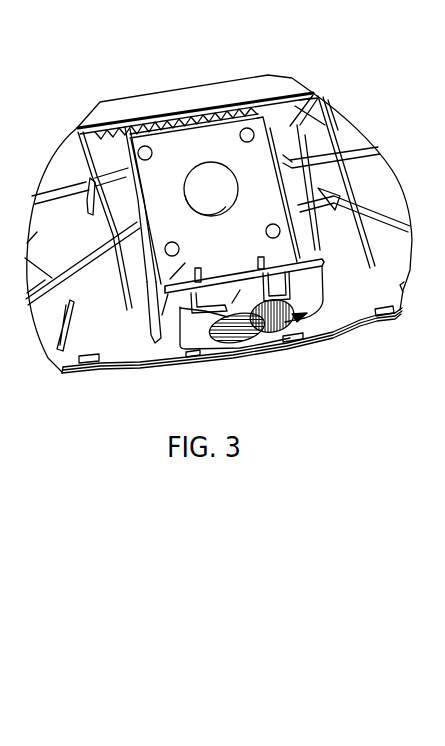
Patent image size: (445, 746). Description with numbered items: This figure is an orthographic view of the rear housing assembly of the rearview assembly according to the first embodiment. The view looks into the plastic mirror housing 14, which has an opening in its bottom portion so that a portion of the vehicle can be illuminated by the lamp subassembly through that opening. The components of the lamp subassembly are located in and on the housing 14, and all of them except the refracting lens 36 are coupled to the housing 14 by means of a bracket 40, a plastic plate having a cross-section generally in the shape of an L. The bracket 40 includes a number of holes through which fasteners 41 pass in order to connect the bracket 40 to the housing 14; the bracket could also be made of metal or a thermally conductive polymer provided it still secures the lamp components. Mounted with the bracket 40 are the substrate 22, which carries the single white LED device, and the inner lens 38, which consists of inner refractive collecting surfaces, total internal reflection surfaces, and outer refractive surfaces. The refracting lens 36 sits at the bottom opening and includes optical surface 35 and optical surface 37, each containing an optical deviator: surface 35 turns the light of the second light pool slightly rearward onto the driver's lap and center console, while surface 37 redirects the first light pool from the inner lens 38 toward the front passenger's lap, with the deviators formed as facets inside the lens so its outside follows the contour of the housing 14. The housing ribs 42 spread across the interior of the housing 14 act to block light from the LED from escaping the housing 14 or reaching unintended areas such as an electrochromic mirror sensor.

The housing 14 is at (282, 82).
The fasteners 41 is at (143, 148).
The substrate 22 is at (333, 233).
The housing ribs 42 is at (148, 310).
The bracket 40 is at (158, 335).
The optical surface 35 is at (191, 352).
The inner lens 38 is at (219, 350).
The refracting lens 36 is at (380, 323).
The optical surface 37 is at (310, 350).